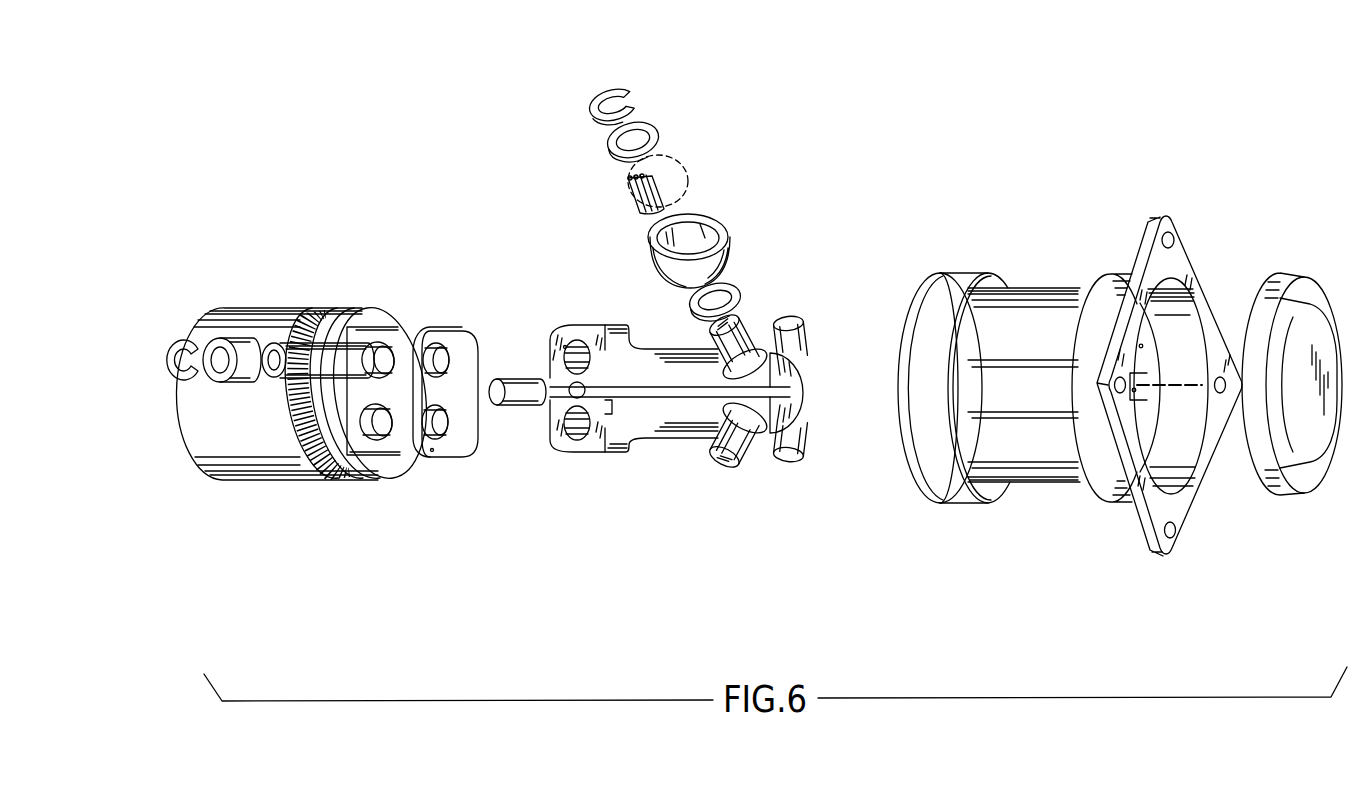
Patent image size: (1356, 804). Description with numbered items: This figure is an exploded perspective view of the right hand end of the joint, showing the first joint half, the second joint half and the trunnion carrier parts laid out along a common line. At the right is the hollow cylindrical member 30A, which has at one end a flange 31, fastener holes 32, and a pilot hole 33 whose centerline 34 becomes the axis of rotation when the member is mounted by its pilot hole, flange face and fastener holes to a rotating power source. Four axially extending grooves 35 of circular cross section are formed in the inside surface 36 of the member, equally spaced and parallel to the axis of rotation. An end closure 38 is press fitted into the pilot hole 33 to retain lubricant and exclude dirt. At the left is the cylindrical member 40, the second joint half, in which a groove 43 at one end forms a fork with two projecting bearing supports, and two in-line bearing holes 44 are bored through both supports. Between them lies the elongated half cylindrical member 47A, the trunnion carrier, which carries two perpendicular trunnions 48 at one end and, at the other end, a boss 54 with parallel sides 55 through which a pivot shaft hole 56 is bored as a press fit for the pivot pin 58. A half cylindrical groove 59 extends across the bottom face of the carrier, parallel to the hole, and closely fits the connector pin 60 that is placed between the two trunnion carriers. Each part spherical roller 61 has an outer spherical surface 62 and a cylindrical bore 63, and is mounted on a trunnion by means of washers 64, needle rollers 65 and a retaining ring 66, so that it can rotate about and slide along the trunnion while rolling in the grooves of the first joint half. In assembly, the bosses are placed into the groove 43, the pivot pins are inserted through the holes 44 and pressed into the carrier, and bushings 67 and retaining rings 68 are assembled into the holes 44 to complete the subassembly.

The hollow cylindrical member 30A is at (997, 272).
The flange 31 is at (1166, 216).
The fastener holes 32 is at (1171, 242).
The pilot hole 33 is at (1195, 280).
The centerline 34 is at (1192, 388).
The axially extending grooves 35 is at (1134, 390).
The inside surface 36 is at (1141, 346).
The end closure 38 is at (1308, 505).
The cylindrical member 40 is at (273, 480).
The groove 43 is at (420, 448).
The in-line bearing holes 44 is at (373, 443).
The elongated half cylindrical member 47A is at (673, 432).
The trunnions 48 is at (737, 463).
The boss 54 is at (600, 333).
The parallel sides 55 is at (565, 347).
The pivot shaft hole 56 is at (575, 345).
The pivot pin 58 is at (287, 345).
The half cylindrical groove 59 is at (602, 433).
The connector pin 60 is at (518, 405).
The part spherical rollers 61 is at (734, 259).
The outer spherical surface 62 is at (727, 235).
The cylindrical bore 63 is at (710, 218).
The washers 64 is at (658, 128).
The needle rollers 65 is at (685, 167).
The retaining ring 66 is at (642, 95).
The bushings 67 is at (240, 339).
The retaining rings 68 is at (188, 338).